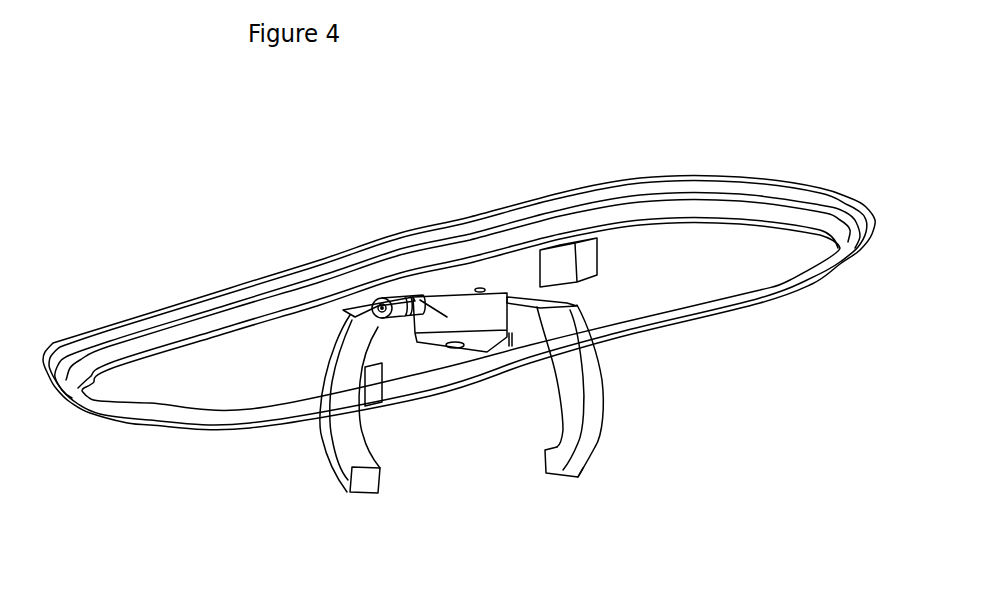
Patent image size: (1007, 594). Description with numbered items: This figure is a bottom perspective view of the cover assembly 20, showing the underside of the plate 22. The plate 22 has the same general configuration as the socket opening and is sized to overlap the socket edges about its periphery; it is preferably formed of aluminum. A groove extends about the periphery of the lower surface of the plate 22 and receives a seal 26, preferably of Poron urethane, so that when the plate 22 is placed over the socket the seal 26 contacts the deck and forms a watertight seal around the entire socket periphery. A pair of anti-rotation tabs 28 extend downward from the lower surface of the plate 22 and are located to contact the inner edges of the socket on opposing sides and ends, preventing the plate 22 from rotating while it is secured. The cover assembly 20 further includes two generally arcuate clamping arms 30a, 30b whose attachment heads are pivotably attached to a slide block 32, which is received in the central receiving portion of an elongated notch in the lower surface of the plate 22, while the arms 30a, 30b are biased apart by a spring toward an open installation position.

The cover assembly 20 is at (258, 242).
The plate 22 is at (430, 231).
The seal 26 is at (862, 242).
The anti-rotation tabs 28 is at (590, 250).
The clamping arm 30a is at (334, 489).
The clamping arm 30b is at (601, 432).
The slide block 32 is at (456, 347).